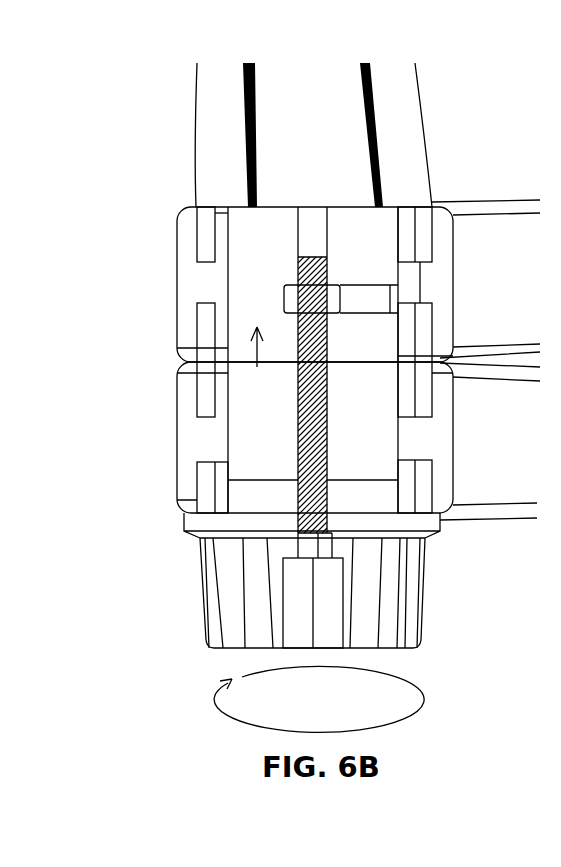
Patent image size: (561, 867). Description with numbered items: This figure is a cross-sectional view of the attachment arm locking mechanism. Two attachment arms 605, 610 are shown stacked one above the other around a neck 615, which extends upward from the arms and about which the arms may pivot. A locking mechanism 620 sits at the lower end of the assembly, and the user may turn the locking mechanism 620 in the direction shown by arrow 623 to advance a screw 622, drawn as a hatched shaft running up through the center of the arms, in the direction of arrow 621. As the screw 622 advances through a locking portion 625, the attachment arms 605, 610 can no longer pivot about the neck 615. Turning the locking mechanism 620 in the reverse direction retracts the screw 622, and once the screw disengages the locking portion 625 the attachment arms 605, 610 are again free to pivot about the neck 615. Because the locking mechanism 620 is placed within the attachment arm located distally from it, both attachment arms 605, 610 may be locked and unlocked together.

The neck 615 is at (415, 133).
The attachment arm 610 is at (177, 265).
The attachment arm 605 is at (177, 432).
The locking portion 625 is at (333, 295).
The screw 622 is at (328, 380).
The arrow 621 is at (252, 372).
The locking mechanism 620 is at (425, 578).
The arrow 623 is at (206, 700).